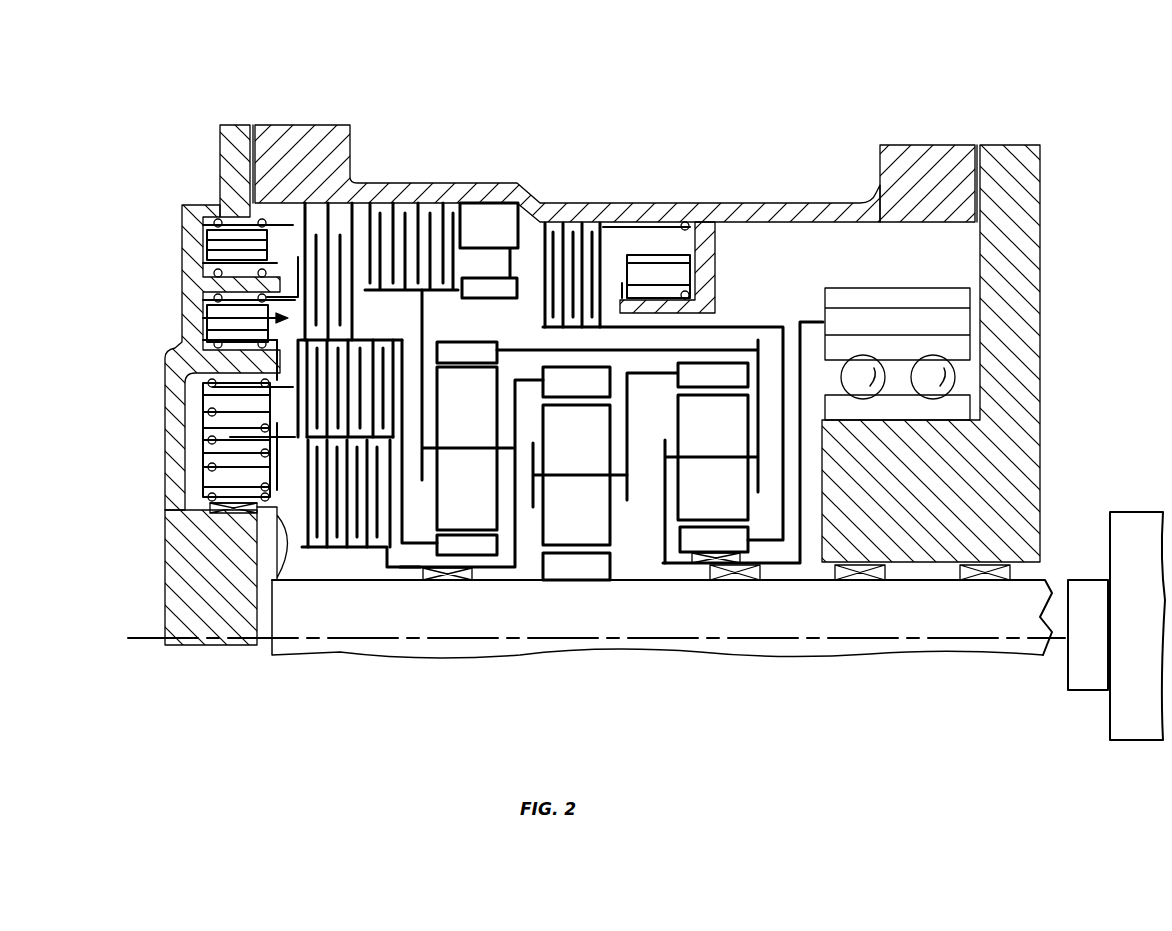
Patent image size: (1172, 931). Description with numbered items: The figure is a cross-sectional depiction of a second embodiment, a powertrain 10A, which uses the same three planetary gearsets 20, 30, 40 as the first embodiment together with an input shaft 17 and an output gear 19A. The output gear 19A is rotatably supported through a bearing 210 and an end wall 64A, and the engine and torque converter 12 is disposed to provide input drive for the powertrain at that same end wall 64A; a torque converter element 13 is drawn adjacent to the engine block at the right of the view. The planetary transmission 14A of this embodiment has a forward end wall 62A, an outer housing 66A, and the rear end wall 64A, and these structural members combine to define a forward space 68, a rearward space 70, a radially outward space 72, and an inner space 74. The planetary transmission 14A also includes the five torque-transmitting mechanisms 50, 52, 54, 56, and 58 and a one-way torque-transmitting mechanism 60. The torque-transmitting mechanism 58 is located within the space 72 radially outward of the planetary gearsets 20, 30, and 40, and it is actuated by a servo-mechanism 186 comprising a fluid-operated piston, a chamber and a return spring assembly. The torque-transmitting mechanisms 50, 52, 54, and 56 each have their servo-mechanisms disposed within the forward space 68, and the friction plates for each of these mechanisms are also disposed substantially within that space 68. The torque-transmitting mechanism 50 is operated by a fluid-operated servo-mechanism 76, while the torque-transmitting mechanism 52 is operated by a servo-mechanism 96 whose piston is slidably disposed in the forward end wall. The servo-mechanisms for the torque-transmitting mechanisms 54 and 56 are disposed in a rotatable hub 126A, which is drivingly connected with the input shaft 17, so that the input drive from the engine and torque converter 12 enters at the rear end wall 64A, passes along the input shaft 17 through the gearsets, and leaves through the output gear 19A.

The powertrain 10A is at (150, 160).
The engine and torque converter 12 is at (1130, 515).
The torque converter 13 is at (1078, 592).
The planetary transmission 14A is at (598, 118).
The input shaft 17 is at (918, 620).
The output gear 19A is at (958, 318).
The planetary gearset 20 is at (489, 580).
The planetary gearset 30 is at (575, 580).
The planetary gearset 40 is at (697, 580).
The torque-transmitting mechanism 50 is at (645, 203).
The torque-transmitting mechanism 52 is at (203, 320).
The torque-transmitting mechanism 54 is at (382, 340).
The torque-transmitting mechanism 56 is at (325, 553).
The torque-transmitting mechanism 58 is at (430, 192).
The one-way torque-transmitting mechanism 60 is at (518, 208).
The end wall 62A is at (178, 352).
The end wall 64A is at (1025, 325).
The outer housing 66A is at (668, 215).
The forward space 68 is at (352, 245).
The rearward space 70 is at (857, 273).
The radially outward space 72 is at (607, 262).
The inner space 74 is at (527, 527).
The servo-mechanism 76 is at (705, 228).
The servo-mechanism 96 is at (200, 326).
The rotatable hub 126A is at (290, 518).
The servo-mechanism 186 is at (200, 207).
The bearing 210 is at (965, 377).